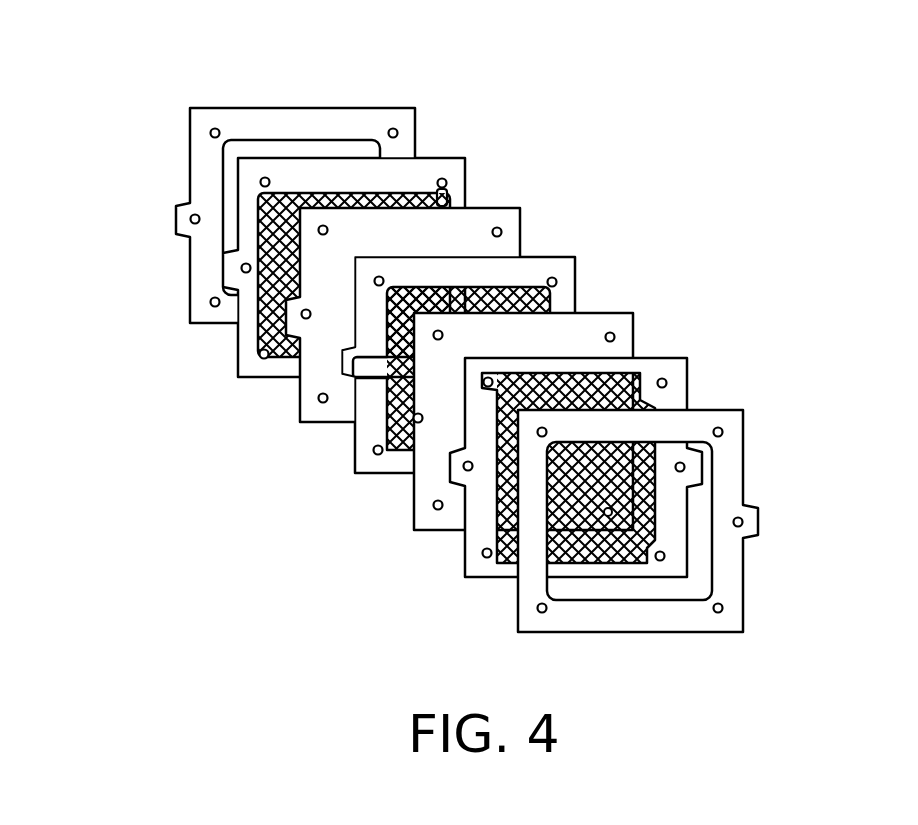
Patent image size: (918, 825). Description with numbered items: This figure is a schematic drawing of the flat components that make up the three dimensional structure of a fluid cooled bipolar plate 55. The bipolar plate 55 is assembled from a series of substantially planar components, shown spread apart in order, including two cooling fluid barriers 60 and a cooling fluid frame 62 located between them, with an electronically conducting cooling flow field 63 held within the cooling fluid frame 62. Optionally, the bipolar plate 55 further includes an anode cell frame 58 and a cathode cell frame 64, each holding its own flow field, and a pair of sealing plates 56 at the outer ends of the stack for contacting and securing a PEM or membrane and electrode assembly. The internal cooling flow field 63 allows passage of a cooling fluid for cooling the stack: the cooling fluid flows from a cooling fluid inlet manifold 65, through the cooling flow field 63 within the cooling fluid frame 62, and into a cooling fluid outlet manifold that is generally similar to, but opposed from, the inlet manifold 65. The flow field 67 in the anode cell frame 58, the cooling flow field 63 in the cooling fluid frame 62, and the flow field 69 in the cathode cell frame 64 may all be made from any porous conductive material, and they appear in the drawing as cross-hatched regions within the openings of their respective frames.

The fluid cooled bipolar plate 55 is at (246, 477).
The sealing plate 56 is at (388, 108).
The anode cell frame 58 is at (457, 158).
The cooling fluid barrier 60 is at (513, 208).
The cooling fluid frame 62 is at (555, 257).
The cooling flow field 63 is at (398, 393).
The cathode cell frame 64 is at (662, 358).
The cooling fluid inlet manifold 65 is at (357, 377).
The flow field 67 is at (255, 340).
The flow field 69 is at (510, 493).